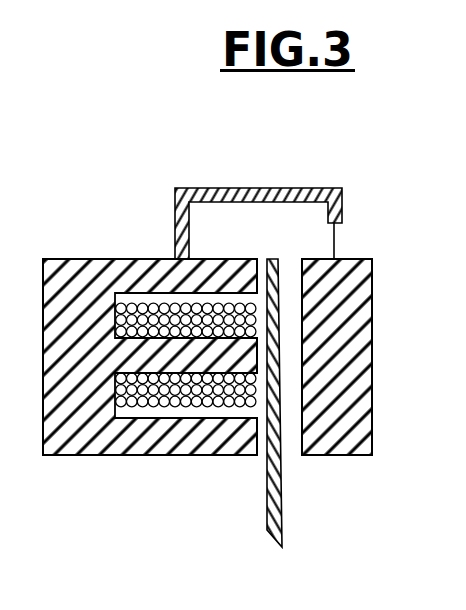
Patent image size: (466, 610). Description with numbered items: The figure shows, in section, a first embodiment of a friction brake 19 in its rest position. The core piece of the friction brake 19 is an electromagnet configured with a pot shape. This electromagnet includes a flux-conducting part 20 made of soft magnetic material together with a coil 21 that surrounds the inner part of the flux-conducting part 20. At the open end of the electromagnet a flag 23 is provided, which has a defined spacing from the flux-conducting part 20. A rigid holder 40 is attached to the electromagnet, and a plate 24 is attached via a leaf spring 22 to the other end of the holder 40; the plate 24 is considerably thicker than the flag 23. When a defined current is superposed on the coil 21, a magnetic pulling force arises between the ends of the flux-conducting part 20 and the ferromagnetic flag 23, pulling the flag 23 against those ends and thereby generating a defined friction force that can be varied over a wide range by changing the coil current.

The friction brake 19 is at (207, 464).
The flux-conducting part 20 is at (80, 259).
The coil 21 is at (150, 405).
The leaf spring 22 is at (335, 238).
The flag 23 is at (283, 485).
The plate 24 is at (372, 320).
The holder 40 is at (332, 188).